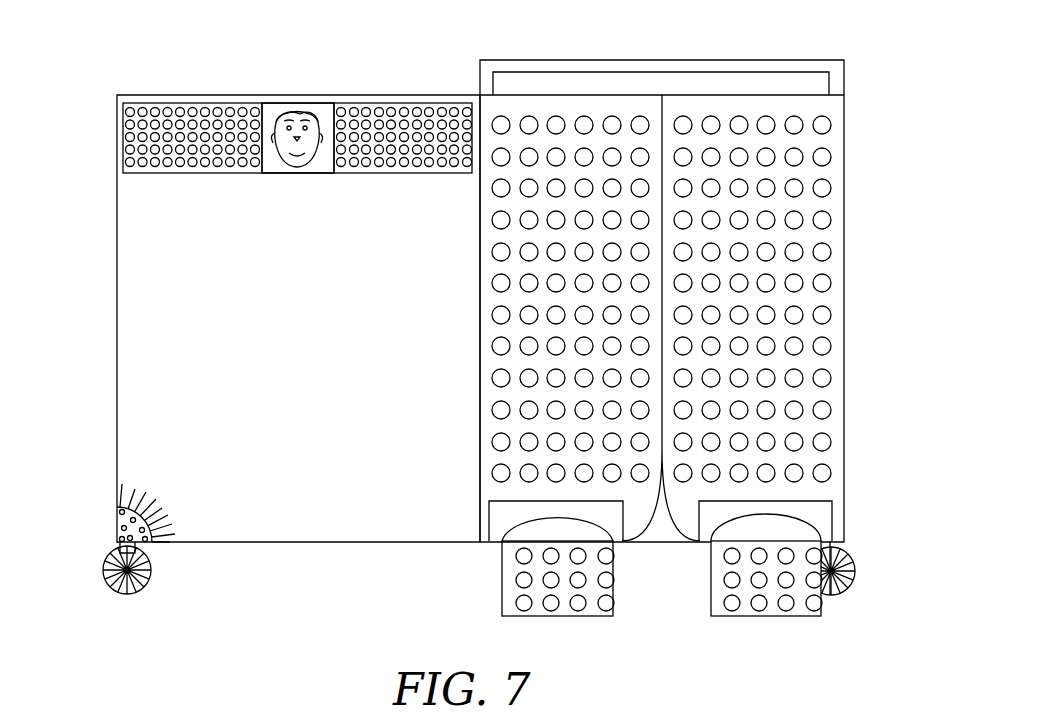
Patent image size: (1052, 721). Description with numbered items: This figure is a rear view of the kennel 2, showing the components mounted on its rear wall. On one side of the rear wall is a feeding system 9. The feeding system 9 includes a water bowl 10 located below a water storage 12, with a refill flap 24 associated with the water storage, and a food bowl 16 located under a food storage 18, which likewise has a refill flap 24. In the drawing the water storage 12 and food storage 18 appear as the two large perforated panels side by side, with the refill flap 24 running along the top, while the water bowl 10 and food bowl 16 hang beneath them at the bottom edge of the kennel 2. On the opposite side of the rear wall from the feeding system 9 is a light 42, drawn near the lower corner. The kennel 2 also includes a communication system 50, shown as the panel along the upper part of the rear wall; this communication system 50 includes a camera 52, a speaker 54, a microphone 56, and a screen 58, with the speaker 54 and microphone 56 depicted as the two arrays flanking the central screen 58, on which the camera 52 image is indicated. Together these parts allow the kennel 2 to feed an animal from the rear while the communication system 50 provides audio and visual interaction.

The kennel 2 is at (735, 42).
The feeding system 9 is at (858, 56).
The water bowl 10 is at (568, 605).
The water storage 12 is at (493, 282).
The food bowl 16 is at (763, 605).
The food storage 18 is at (832, 233).
The refill flap 24 is at (518, 72).
The light 42 is at (104, 530).
The communication system 50 is at (108, 126).
The camera 52 is at (298, 103).
The speaker 54 is at (138, 128).
The microphone 56 is at (428, 137).
The screen 58 is at (321, 112).